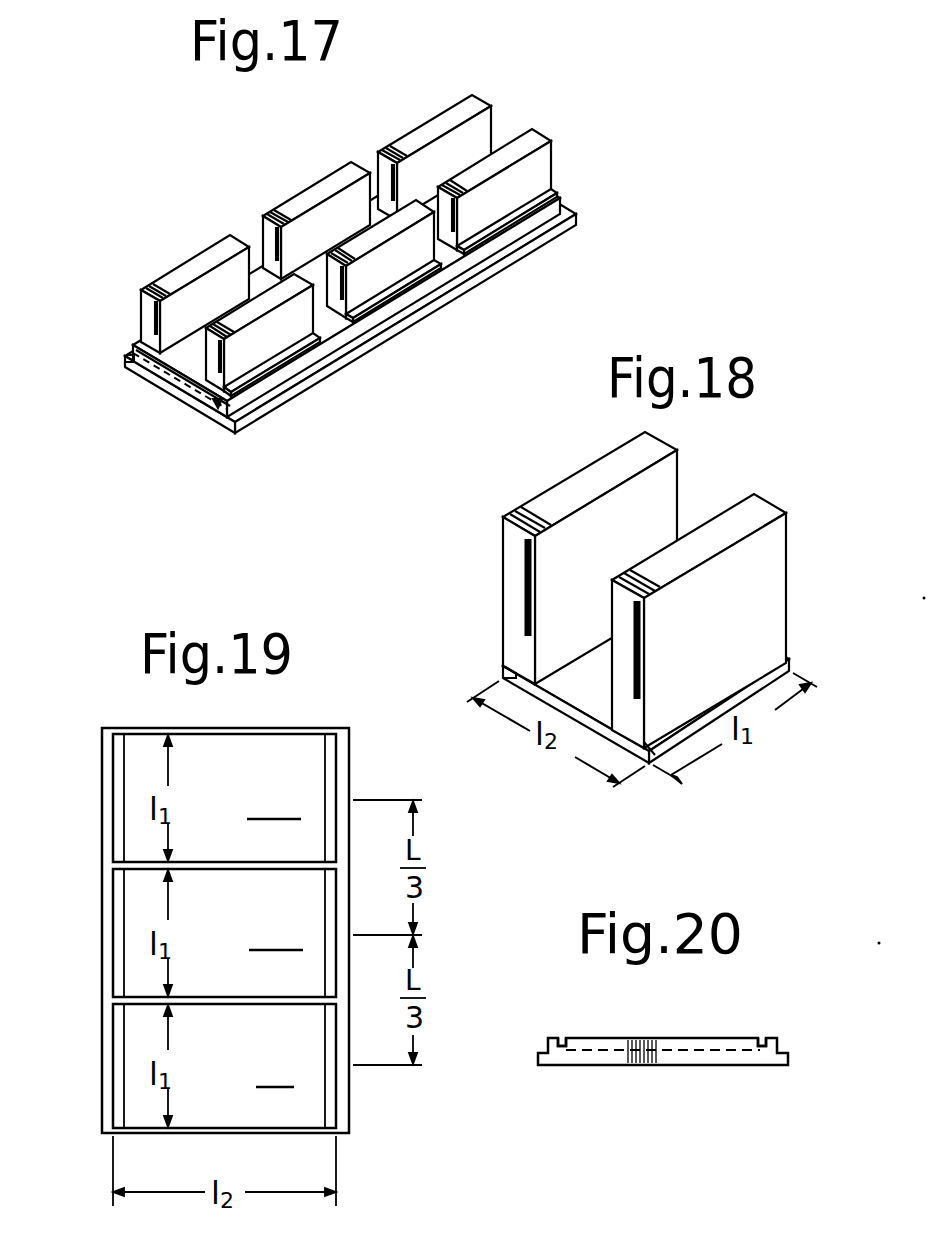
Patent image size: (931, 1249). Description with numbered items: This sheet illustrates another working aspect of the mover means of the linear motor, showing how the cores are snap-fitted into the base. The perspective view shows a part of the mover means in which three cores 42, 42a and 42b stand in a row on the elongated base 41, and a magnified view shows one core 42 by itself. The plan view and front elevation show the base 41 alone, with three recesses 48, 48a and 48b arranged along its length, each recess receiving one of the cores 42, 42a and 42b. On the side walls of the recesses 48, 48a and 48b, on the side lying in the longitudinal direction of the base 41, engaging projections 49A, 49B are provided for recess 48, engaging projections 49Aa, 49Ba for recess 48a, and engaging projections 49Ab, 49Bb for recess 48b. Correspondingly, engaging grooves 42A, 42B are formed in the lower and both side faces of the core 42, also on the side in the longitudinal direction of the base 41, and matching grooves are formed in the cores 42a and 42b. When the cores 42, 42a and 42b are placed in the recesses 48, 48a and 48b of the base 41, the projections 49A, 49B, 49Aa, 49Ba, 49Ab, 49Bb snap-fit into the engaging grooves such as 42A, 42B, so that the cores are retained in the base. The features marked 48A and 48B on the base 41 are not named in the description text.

In FIG. 17, the base 41 is at (335, 313).
In FIG. 19, the base 41 is at (346, 768).
In FIG. 20, the base 41 is at (788, 1056).
In FIG. 17, the core 42 is at (295, 333).
In FIG. 18, the core 42 is at (634, 632).
In FIG. 17, the core 42a is at (405, 265).
In FIG. 17, the core 42b is at (500, 213).
In FIG. 18, the engaging groove 42A is at (652, 755).
In FIG. 18, the engaging groove 42B is at (514, 670).
In FIG. 19, the recess 48 is at (236, 1066).
In FIG. 19, the recess 48a is at (266, 933).
In FIG. 19, the recess 48b is at (232, 775).
In FIG. 17, the notch 48A is at (216, 412).
In FIG. 17, the notch 48B is at (142, 367).
In FIG. 19, the engaging projection 49A is at (330, 1107).
In FIG. 20, the engaging projection 49A is at (761, 1038).
In FIG. 19, the engaging projection 49Aa is at (328, 927).
In FIG. 19, the engaging projection 49Ab is at (335, 750).
In FIG. 19, the engaging projection 49B is at (118, 1067).
In FIG. 20, the engaging projection 49B is at (566, 1040).
In FIG. 19, the engaging projection 49Ba is at (120, 933).
In FIG. 19, the engaging projection 49Bb is at (120, 785).